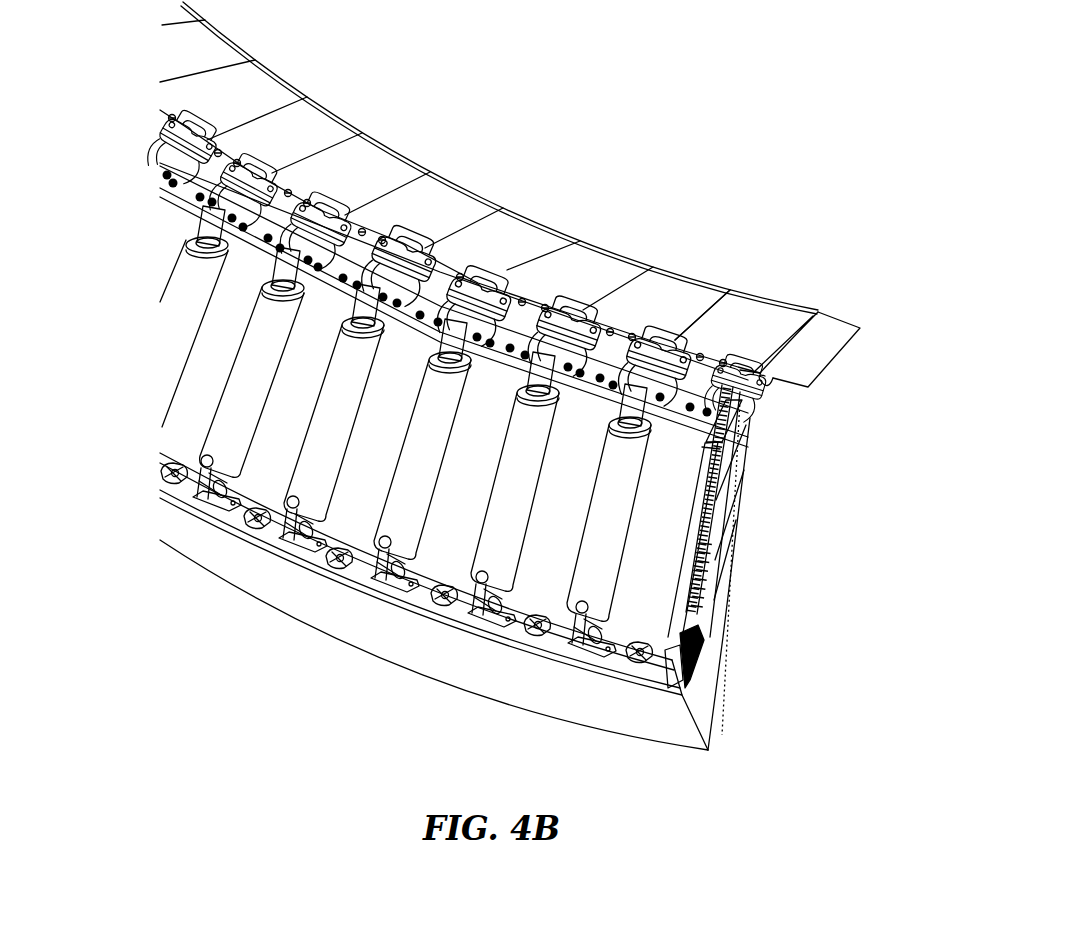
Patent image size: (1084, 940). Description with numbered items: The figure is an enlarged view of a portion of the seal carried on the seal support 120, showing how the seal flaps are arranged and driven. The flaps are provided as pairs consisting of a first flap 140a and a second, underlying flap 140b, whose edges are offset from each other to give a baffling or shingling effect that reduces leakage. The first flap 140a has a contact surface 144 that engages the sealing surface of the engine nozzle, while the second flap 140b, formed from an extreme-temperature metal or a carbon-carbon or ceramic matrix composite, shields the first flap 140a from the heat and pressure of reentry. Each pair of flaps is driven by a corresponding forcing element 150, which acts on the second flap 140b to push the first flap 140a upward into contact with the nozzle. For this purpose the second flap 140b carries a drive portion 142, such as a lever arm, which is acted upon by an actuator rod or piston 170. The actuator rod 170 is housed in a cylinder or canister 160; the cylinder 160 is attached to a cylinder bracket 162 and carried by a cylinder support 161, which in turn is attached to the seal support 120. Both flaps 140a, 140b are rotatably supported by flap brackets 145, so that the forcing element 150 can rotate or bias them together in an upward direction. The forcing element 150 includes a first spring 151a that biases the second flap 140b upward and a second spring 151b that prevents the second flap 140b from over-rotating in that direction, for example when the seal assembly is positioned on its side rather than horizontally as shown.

The seal support 120 is at (492, 110).
The drive portion 142 is at (336, 212).
The contact surface 144 is at (563, 232).
The first flap 140a is at (750, 317).
The second flap 140b is at (817, 348).
The actuator rod or piston 170 is at (285, 270).
The cylinder or canister 160 is at (213, 438).
The flap brackets 145 is at (687, 440).
The cylinder support 161 is at (263, 533).
The cylinder bracket 162 is at (215, 523).
The forcing element 150 is at (748, 514).
The first spring 151a is at (700, 520).
The second spring 151b is at (715, 580).